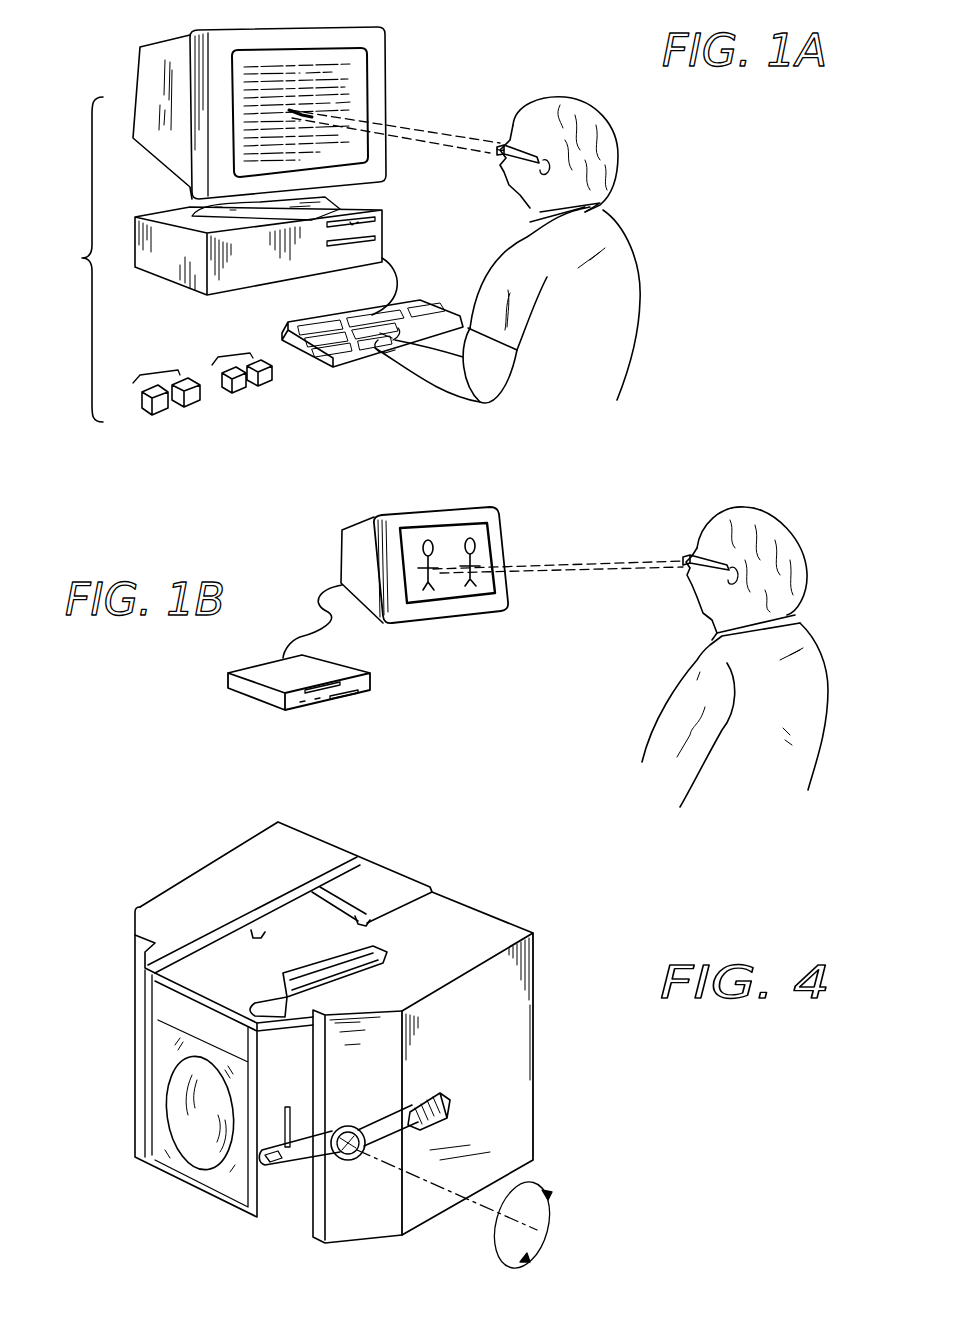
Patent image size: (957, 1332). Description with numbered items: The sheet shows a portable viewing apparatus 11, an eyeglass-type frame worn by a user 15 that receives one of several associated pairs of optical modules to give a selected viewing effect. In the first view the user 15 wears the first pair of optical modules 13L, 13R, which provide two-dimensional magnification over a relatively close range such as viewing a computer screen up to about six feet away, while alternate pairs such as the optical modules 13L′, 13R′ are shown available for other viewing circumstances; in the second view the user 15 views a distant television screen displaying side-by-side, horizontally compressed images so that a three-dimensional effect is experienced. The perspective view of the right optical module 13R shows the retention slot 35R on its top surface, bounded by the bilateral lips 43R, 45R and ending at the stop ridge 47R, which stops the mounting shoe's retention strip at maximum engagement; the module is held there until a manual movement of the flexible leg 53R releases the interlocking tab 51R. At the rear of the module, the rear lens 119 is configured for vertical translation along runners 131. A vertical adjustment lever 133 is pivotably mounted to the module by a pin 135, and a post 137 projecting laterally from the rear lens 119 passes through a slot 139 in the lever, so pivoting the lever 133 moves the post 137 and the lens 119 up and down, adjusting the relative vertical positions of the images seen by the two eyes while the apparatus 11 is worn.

In FIG. 1A, the portable viewing apparatus 11 is at (487, 158).
In FIG. 1B, the portable viewing apparatus 11 is at (675, 533).
In FIG. 1A, the user 15 is at (560, 103).
In FIG. 1B, the user 15 is at (782, 538).
In FIG. 1A, the left optical module 13L is at (497, 163).
In FIG. 4, the right optical module 13R is at (295, 837).
In FIG. 1A, the left optical module 13L′ is at (168, 410).
In FIG. 1B, the left optical module 13L′ is at (687, 571).
In FIG. 1A, the right optical module 13R′ is at (193, 402).
In FIG. 4, the retention slot 35R is at (245, 947).
In FIG. 4, the lip 43R is at (260, 925).
In FIG. 4, the lip 45R is at (357, 920).
In FIG. 4, the stop ridge 47R is at (362, 920).
In FIG. 4, the interlocking tab 51R is at (223, 945).
In FIG. 4, the flexible leg 53R is at (310, 970).
In FIG. 4, the rear lens 119 is at (165, 1110).
In FIG. 4, the runners 131 is at (160, 1002).
In FIG. 4, the vertical adjustment lever 133 is at (447, 1117).
In FIG. 4, the pin 135 is at (352, 1160).
In FIG. 4, the post 137 is at (293, 1163).
In FIG. 4, the slot 139 is at (273, 1167).